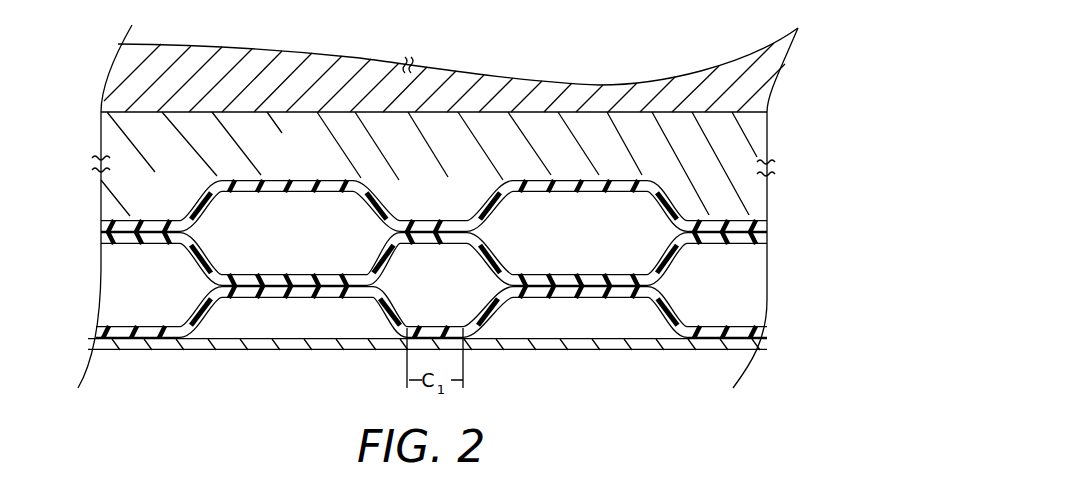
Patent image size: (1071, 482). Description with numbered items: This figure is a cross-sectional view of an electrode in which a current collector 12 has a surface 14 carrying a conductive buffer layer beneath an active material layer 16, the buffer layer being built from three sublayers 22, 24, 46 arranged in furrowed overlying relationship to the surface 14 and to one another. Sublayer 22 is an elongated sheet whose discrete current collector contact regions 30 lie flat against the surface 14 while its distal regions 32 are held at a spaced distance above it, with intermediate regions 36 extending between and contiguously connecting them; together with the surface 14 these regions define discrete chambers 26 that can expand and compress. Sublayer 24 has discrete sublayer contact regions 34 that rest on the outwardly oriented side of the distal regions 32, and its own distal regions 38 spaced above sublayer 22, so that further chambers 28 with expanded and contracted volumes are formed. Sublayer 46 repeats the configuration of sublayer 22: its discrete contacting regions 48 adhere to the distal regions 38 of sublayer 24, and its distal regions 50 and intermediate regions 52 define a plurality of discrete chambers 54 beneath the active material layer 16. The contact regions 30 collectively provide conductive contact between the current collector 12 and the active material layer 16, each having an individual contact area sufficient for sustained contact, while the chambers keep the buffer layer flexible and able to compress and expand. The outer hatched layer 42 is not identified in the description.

The current collector 12 is at (131, 346).
The surface 14 is at (216, 331).
The active material layer 16 is at (101, 133).
The sublayer 22 is at (101, 333).
The sublayer 24 is at (101, 243).
The discrete chambers 26 is at (279, 329).
The chambers 28 is at (124, 294).
The discrete current collector contact regions 30 is at (715, 336).
The distal regions 32 is at (617, 293).
The discrete sublayer contact regions 34 is at (545, 274).
The intermediate regions 36 is at (384, 312).
The distal regions 38 is at (479, 211).
The outer layer 42 is at (763, 88).
The sublayer 46 is at (101, 226).
The discrete contacting regions 48 is at (431, 217).
The distal regions 50 is at (295, 177).
The intermediate regions 52 is at (191, 209).
The discrete chambers 54 is at (279, 241).